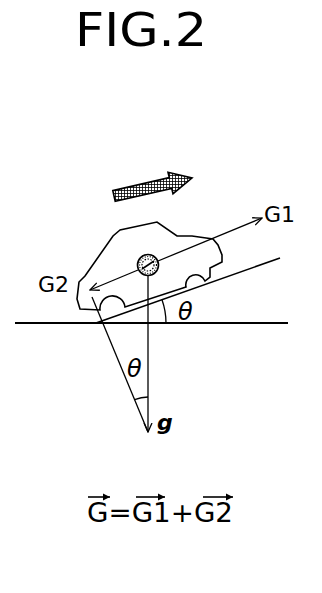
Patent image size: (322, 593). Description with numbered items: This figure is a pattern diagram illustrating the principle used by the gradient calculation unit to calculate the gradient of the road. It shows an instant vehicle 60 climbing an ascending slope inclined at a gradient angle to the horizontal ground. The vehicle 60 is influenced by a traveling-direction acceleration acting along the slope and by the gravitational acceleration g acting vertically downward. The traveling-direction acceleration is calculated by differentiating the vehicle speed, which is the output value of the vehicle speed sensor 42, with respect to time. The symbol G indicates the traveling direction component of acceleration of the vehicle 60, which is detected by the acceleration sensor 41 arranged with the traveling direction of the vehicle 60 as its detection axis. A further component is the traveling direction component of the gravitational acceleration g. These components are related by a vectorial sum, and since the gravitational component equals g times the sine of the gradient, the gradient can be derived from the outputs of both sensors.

The vehicle 60 is at (110, 244).
The acceleration sensor 41 is at (206, 313).
The vehicle speed sensor 42 is at (155, 275).